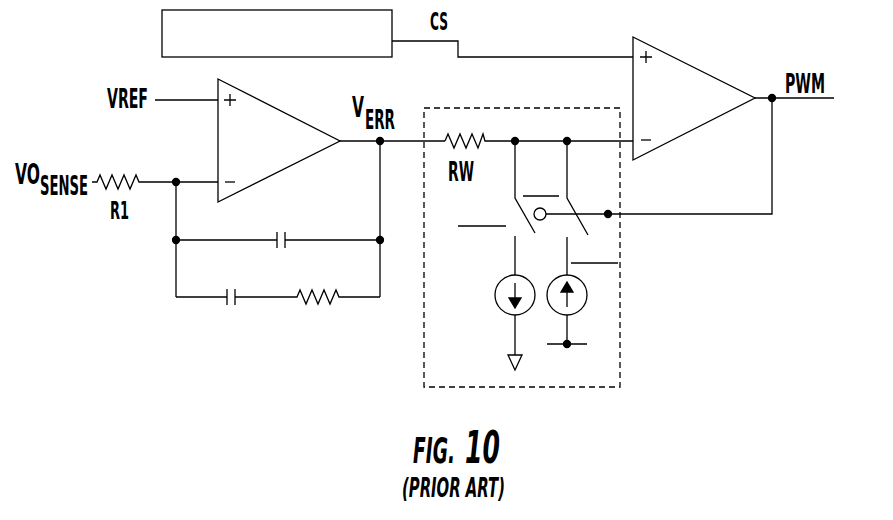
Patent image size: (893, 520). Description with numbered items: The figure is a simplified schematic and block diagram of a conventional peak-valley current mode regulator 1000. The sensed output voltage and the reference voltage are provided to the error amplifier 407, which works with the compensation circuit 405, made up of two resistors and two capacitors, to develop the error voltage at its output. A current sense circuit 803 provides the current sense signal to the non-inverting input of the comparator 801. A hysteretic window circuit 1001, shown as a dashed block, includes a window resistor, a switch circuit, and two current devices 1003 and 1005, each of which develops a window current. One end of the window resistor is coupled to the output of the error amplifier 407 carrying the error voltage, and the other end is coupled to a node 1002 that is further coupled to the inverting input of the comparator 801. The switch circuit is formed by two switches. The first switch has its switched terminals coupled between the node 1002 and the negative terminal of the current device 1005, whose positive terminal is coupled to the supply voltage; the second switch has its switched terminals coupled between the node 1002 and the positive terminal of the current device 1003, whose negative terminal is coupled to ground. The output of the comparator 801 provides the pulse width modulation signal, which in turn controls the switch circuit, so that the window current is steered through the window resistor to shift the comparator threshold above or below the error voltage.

The current sense circuit 803 is at (287, 44).
The comparator 801 is at (683, 113).
The error amplifier 407 is at (268, 156).
The peak-valley current mode regulator 1000 is at (255, 382).
The compensation circuit 405 is at (163, 251).
The hysteretic window circuit 1001 is at (622, 348).
The node 1002 is at (515, 141).
The current device 1003 is at (511, 313).
The current device 1005 is at (582, 283).